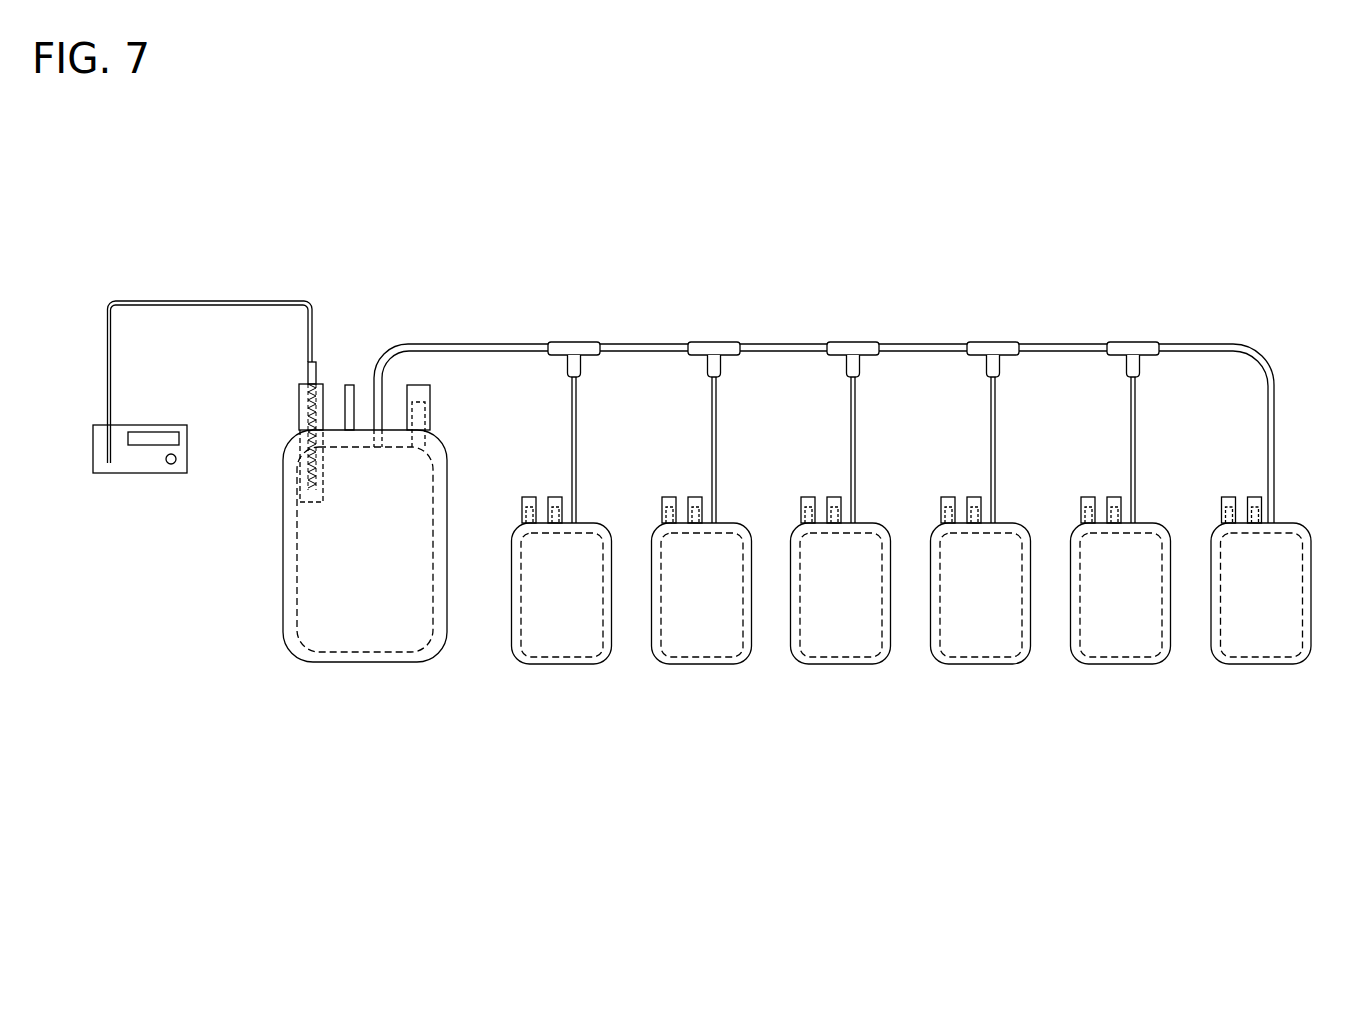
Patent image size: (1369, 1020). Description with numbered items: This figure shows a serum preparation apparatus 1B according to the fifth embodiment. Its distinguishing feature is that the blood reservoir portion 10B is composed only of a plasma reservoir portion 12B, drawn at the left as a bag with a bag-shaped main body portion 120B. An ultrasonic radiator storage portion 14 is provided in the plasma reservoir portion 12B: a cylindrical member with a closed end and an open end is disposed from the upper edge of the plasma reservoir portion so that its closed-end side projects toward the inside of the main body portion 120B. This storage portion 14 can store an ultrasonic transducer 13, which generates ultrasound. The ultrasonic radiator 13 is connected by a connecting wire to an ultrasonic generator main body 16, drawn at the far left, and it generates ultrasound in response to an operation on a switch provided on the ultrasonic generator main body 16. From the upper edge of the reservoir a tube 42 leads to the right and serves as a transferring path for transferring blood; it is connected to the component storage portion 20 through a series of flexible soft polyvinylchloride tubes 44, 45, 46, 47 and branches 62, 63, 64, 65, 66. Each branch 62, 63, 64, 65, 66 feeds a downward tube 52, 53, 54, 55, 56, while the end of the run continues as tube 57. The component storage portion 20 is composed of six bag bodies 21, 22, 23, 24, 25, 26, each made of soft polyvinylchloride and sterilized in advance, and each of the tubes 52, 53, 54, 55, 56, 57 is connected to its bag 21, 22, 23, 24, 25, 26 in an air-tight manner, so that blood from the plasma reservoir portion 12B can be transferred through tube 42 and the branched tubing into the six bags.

The serum preparation apparatus 1B is at (860, 494).
The blood reservoir portion 10B is at (337, 510).
The plasma reservoir portion 12B is at (432, 552).
The main body portion 120B is at (410, 475).
The ultrasonic transducer 13 is at (308, 373).
The ultrasonic radiator storage portion 14 is at (299, 420).
The ultrasonic generator main body 16 is at (186, 462).
The component storage portion 20 is at (912, 660).
The bag body 21 is at (572, 664).
The bag body 22 is at (693, 665).
The bag body 23 is at (835, 665).
The bag body 24 is at (983, 665).
The bag body 25 is at (1120, 665).
The bag body 26 is at (1197, 626).
The tube 42 is at (482, 343).
The tube 44 is at (633, 343).
The tube 45 is at (772, 343).
The tube 46 is at (912, 343).
The tube 47 is at (1050, 343).
The tube 52 is at (577, 421).
The tube 53 is at (717, 421).
The tube 54 is at (856, 421).
The tube 55 is at (996, 421).
The tube 56 is at (1136, 421).
The tube 57 is at (1276, 425).
The branch 62 is at (570, 341).
The branch 63 is at (710, 341).
The branch 64 is at (850, 341).
The branch 65 is at (989, 341).
The branch 66 is at (1129, 341).